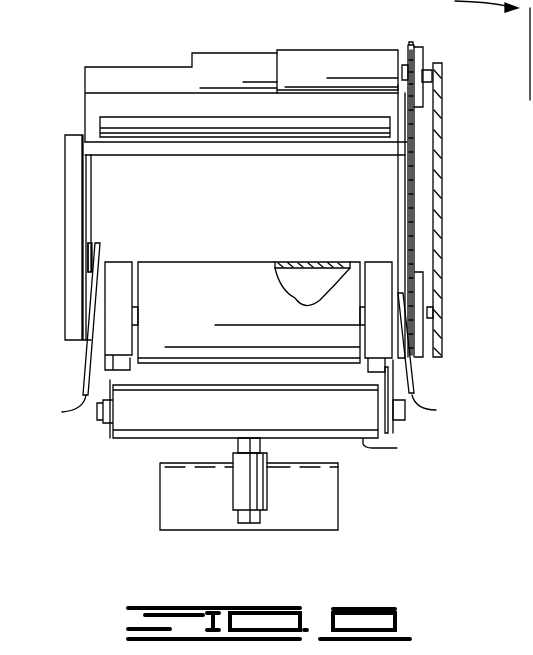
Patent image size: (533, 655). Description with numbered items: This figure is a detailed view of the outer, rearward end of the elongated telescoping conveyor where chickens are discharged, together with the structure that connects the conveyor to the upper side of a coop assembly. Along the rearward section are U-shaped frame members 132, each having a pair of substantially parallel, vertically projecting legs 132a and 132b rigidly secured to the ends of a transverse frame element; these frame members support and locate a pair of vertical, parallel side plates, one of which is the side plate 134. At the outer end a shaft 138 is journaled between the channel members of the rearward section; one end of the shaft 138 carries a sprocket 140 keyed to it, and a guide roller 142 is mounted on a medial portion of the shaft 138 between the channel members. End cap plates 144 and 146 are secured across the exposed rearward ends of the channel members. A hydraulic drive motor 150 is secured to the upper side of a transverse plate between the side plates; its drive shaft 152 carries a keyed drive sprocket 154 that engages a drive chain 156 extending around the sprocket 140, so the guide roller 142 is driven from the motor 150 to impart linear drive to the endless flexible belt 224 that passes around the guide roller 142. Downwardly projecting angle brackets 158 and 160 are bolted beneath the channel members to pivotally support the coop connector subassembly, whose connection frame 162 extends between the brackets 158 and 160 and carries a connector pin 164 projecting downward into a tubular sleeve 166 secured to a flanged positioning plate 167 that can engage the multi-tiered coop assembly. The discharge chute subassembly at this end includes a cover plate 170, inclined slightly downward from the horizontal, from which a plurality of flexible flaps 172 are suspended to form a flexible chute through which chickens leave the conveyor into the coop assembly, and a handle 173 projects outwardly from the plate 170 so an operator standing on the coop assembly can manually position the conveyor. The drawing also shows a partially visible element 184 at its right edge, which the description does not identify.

The U-shaped frame member 132 is at (62, 170).
The vertically projecting leg 132a is at (72, 222).
The vertically projecting leg 132b is at (530, 54).
The side plate 134 is at (90, 176).
The shaft 138 is at (428, 308).
The sprocket 140 is at (424, 280).
The guide roller 142 is at (303, 290).
The end cap plate 144 is at (112, 304).
The end cap plate 146 is at (380, 333).
The hydraulic drive motor 150 is at (302, 55).
The drive shaft 152 is at (427, 68).
The drive sprocket 154 is at (410, 45).
The drive chain 156 is at (415, 155).
The angle bracket 158 is at (108, 381).
The angle bracket 160 is at (400, 383).
The connection frame 162 is at (380, 442).
The connector pin 164 is at (238, 445).
The tubular sleeve 166 is at (252, 497).
The flanged positioning plate 167 is at (249, 496).
The cover plate 170 is at (125, 97).
The flexible flap 172 is at (249, 409).
The handle 173 is at (218, 148).
The member 184 is at (522, 123).
The endless flexible belt 224 is at (249, 312).